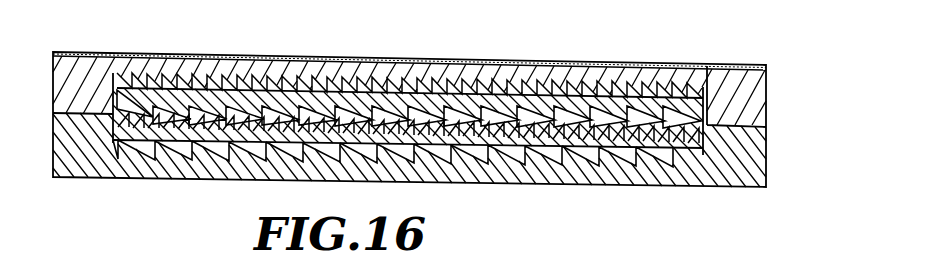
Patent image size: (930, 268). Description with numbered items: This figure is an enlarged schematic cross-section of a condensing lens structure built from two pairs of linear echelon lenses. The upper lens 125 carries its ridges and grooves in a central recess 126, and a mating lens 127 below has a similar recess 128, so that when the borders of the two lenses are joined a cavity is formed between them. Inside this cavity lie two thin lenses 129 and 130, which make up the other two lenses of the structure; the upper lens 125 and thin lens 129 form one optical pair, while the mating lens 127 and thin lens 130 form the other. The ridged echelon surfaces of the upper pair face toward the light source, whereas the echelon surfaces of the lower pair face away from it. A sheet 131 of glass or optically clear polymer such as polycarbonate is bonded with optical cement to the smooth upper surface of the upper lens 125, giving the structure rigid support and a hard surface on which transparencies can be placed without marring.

The upper lens 125 is at (766, 91).
The central recess 126 is at (702, 124).
The mating lens 127 is at (742, 188).
The recess 128 is at (698, 149).
The thin lens 129 is at (134, 98).
The thin lens 130 is at (133, 145).
The sheet 131 is at (740, 62).